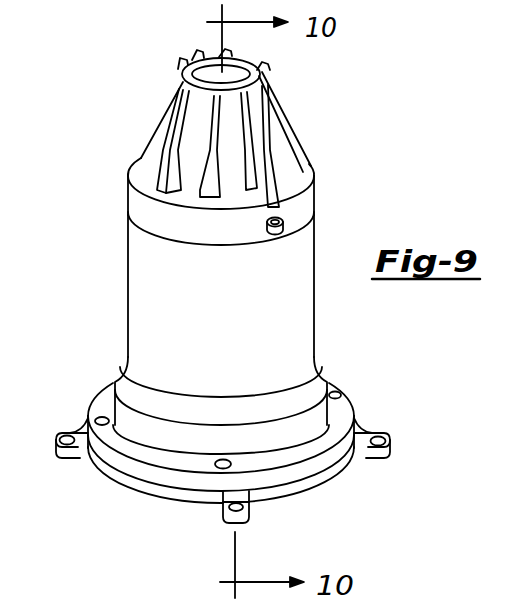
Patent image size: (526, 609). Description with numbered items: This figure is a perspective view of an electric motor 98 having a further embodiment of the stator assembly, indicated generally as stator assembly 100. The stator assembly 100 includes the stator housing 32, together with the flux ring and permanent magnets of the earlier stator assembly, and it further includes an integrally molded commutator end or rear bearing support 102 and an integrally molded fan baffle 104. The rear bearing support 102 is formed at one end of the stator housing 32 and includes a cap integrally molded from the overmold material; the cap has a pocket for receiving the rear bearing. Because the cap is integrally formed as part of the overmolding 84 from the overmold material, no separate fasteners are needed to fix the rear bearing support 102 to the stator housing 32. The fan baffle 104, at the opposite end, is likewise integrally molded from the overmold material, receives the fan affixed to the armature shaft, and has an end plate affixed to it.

The stator assembly 100 is at (202, 147).
The electric motor 98 is at (225, 369).
The rear bearing support 102 is at (302, 119).
The overmolding 84 is at (286, 210).
The stator housing 32 is at (298, 327).
The fan baffle 104 is at (358, 428).